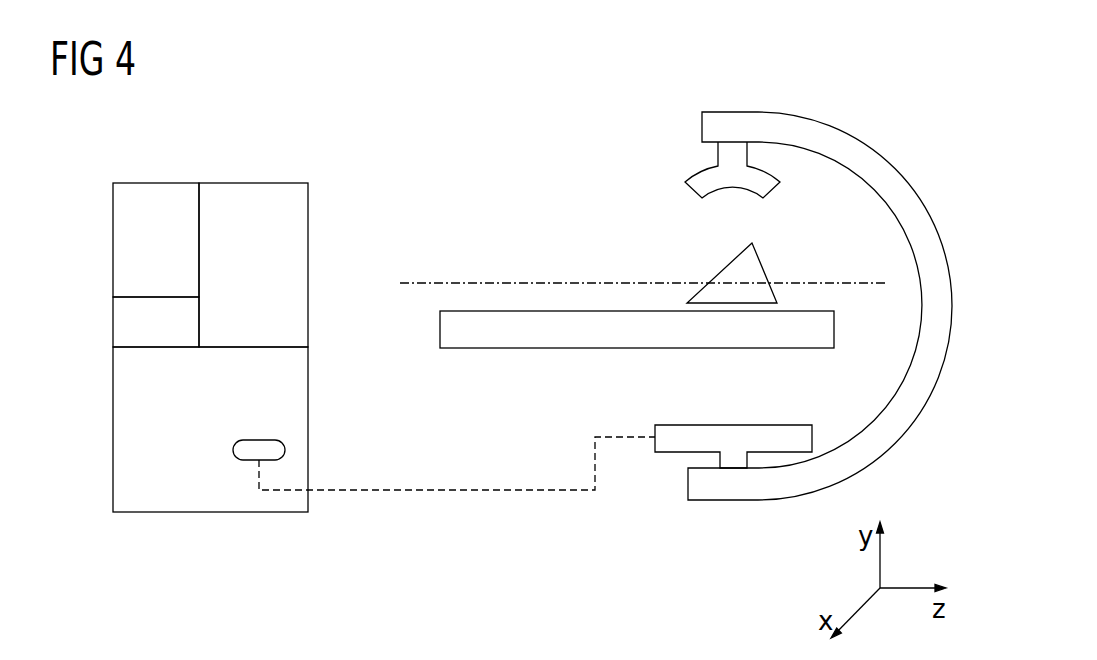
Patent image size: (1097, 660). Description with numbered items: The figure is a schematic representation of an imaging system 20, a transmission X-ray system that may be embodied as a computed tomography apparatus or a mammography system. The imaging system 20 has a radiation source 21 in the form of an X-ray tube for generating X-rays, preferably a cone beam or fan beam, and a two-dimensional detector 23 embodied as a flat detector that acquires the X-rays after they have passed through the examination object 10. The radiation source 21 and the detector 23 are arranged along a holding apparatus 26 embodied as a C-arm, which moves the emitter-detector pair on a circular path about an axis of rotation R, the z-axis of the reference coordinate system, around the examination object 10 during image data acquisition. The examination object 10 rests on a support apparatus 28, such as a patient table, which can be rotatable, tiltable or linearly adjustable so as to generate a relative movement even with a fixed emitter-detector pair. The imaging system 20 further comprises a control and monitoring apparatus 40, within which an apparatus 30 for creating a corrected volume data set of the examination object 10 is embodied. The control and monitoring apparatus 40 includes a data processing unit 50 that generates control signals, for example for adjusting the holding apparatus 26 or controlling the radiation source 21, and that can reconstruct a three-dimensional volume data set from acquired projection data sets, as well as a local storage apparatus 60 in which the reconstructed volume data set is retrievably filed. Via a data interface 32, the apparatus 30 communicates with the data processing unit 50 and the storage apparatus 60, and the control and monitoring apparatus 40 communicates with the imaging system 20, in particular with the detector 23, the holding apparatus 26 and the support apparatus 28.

The examination object 10 is at (778, 267).
The imaging system 20 is at (608, 198).
The radiation source 21 is at (689, 179).
The 2D detector 23 is at (730, 425).
The holding apparatus 26 is at (884, 157).
The support apparatus 28 is at (440, 330).
The apparatus for creating a corrected volume data set 30 is at (213, 183).
The data interface 32 is at (259, 440).
The control and monitoring apparatus 40 is at (135, 383).
The data processing unit 50 is at (135, 240).
The storage apparatus 60 is at (135, 323).
The axis of rotation R is at (425, 283).